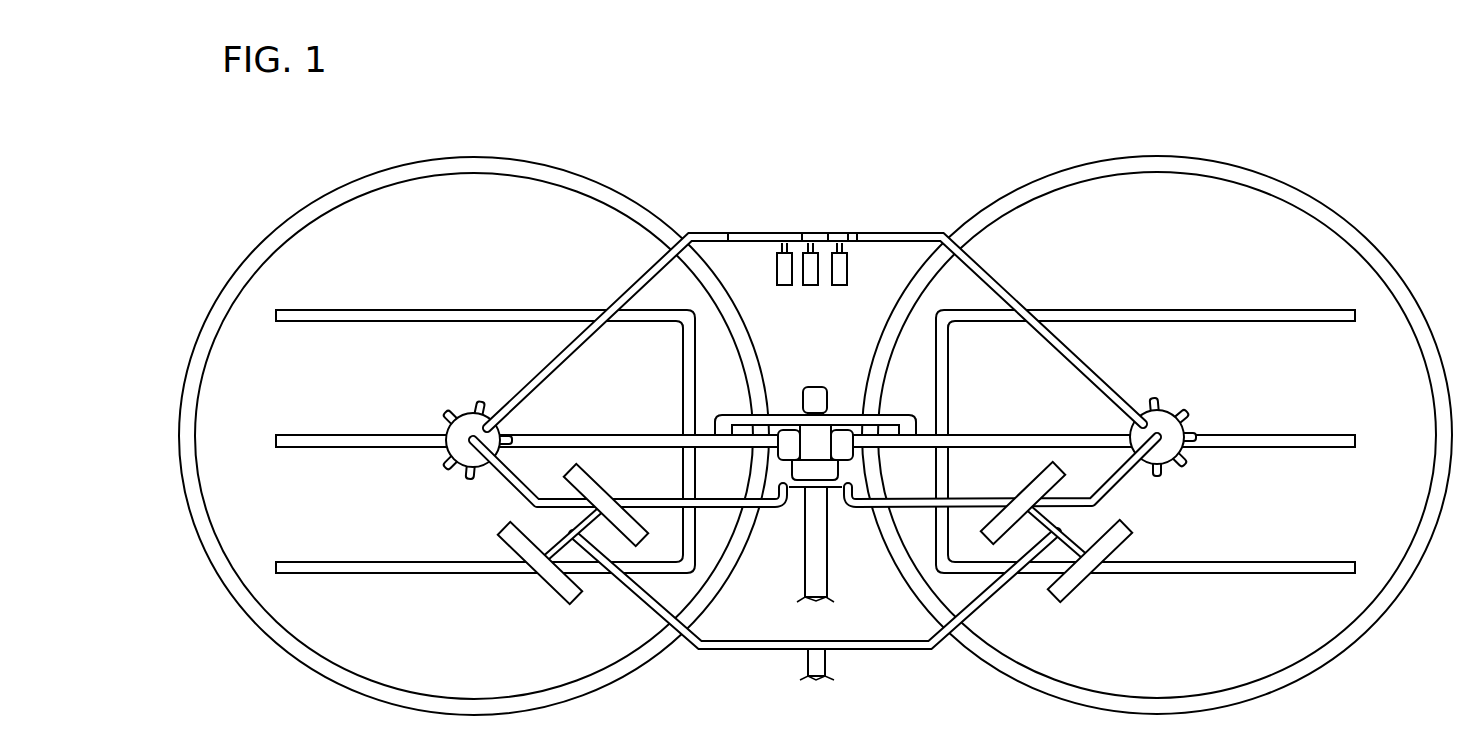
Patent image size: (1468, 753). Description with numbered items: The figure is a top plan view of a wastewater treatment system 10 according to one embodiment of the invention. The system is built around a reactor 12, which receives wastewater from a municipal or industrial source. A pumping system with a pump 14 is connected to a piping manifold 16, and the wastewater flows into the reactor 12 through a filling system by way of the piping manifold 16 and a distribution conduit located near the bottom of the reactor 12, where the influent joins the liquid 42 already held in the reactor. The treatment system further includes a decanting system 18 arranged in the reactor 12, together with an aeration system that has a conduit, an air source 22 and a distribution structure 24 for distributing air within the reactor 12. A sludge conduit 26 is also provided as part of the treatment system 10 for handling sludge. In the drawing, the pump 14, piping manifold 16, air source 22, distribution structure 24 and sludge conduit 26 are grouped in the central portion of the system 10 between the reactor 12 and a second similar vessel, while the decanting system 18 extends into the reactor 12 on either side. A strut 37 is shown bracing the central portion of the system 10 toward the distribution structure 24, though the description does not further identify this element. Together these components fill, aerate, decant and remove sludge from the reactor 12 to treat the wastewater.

The wastewater treatment system 10 is at (735, 696).
The reactor 12 is at (320, 650).
The pump 14 is at (803, 388).
The piping manifold 16 is at (840, 418).
The decanting system 18 is at (630, 609).
The air source 22 is at (840, 287).
The distribution structure 24 is at (457, 408).
The sludge conduit 26 is at (805, 557).
The strut 37 is at (993, 272).
The liquid 42 is at (1354, 529).